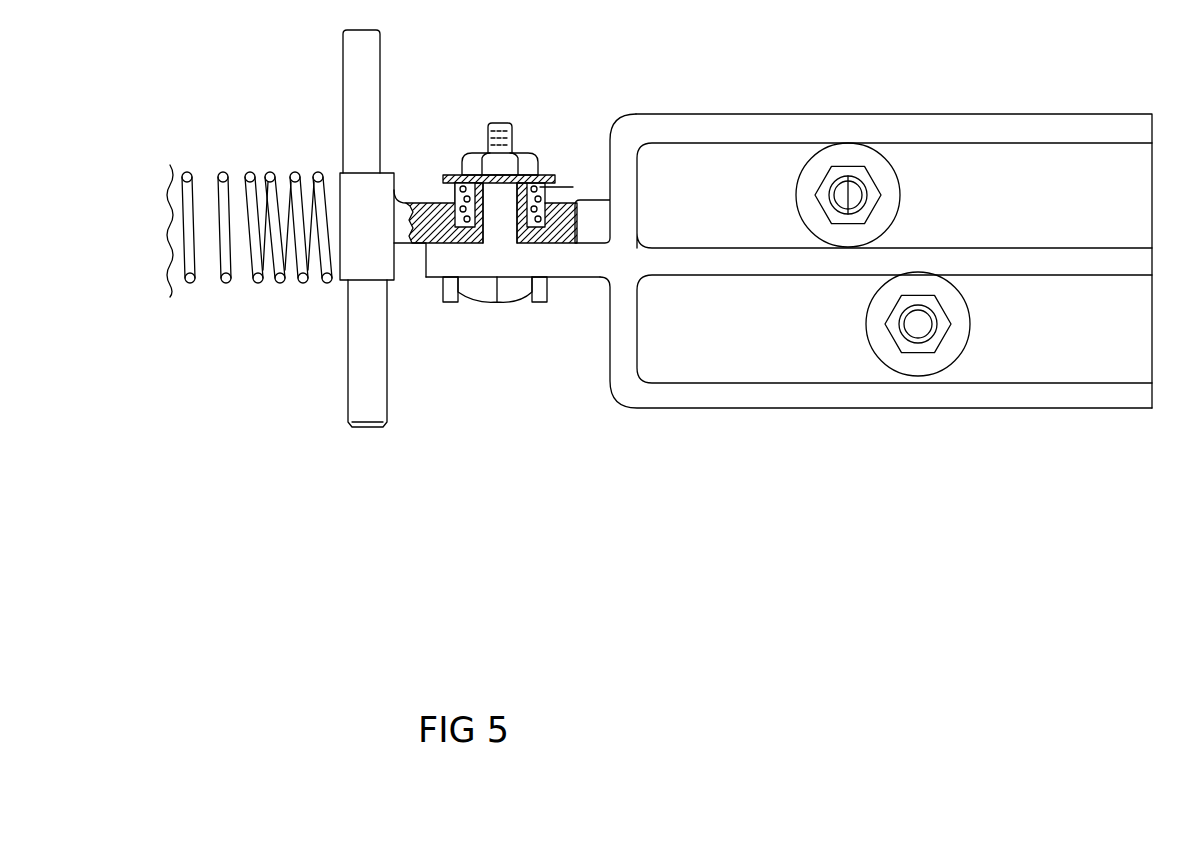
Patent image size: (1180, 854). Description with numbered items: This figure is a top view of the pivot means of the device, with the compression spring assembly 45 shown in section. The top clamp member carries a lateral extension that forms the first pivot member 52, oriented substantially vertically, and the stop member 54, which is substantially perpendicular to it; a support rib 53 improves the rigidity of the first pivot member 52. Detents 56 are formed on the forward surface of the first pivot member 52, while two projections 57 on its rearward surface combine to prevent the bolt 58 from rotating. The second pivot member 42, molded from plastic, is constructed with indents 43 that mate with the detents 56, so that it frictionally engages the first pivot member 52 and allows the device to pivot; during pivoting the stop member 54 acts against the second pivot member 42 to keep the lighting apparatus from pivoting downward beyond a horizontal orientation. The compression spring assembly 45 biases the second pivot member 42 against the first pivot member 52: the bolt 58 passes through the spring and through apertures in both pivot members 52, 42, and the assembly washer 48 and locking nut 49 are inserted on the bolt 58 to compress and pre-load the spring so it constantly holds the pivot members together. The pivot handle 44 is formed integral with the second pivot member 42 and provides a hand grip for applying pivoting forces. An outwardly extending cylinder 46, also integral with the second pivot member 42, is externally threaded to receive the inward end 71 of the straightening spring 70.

The second pivot member 42 is at (433, 207).
The indents 43 is at (597, 218).
The pivot handle 44 is at (365, 373).
The compression spring assembly 45 is at (498, 120).
The cylinder 46 is at (232, 226).
The assembly washer 48 is at (450, 175).
The locking nut 49 is at (532, 155).
The first pivot member 52 is at (555, 262).
The support rib 53 is at (603, 302).
The stop member 54 is at (633, 172).
The detents 56 is at (445, 237).
The projections 57 is at (452, 302).
The bolt 58 is at (498, 302).
The straightening spring 70 is at (183, 176).
The inward end 71 is at (320, 176).